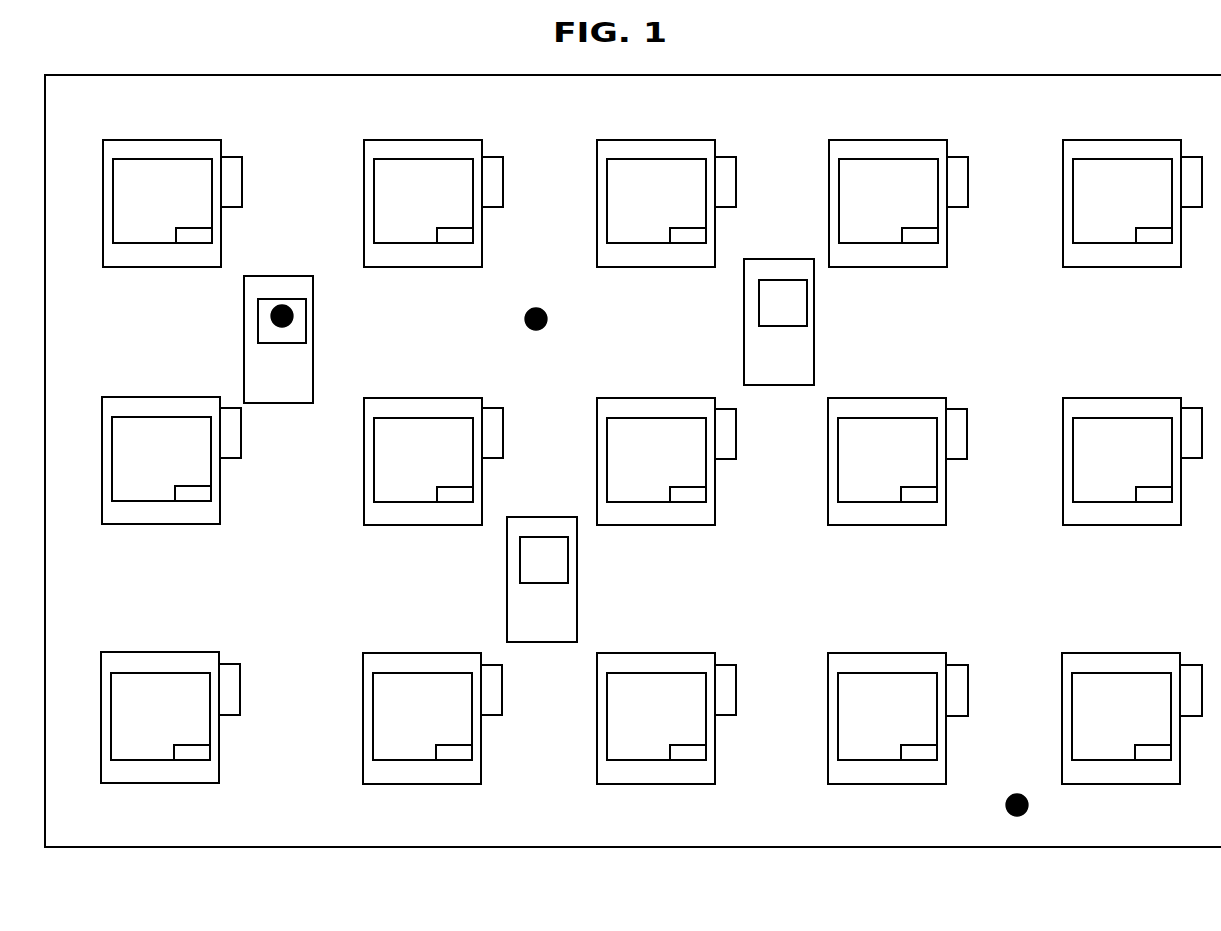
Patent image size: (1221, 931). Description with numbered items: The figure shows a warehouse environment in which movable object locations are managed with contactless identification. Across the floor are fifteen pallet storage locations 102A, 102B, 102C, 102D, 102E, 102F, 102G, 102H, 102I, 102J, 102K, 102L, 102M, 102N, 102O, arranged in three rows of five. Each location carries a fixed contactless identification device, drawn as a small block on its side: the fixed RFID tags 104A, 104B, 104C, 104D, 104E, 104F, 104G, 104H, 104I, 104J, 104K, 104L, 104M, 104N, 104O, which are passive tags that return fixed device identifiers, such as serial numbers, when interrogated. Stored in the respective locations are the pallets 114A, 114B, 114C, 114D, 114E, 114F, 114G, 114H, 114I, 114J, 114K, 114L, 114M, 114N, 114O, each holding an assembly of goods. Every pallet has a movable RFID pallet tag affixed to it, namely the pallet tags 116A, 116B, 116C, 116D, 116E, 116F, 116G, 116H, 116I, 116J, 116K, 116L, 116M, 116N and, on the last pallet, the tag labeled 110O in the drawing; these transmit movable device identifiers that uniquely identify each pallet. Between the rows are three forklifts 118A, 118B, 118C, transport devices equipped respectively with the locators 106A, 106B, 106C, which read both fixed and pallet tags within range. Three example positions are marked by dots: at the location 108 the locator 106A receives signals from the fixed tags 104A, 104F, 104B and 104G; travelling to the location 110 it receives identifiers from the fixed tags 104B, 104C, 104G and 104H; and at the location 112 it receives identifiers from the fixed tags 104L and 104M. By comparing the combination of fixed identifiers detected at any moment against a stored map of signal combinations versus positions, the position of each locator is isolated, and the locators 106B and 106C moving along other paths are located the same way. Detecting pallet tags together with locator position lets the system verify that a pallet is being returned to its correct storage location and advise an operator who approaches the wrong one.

The pallet storage location 102A is at (155, 140).
The pallet storage location 102B is at (416, 140).
The pallet storage location 102C is at (650, 140).
The pallet storage location 102D is at (882, 140).
The pallet storage location 102E is at (1117, 140).
The pallet storage location 102F is at (160, 397).
The pallet storage location 102G is at (417, 398).
The pallet storage location 102H is at (648, 398).
The pallet storage location 102I is at (905, 398).
The pallet storage location 102J is at (1120, 398).
The pallet storage location 102K is at (165, 652).
The pallet storage location 102L is at (415, 653).
The pallet storage location 102M is at (675, 653).
The pallet storage location 102N is at (885, 653).
The pallet storage location 102O is at (1120, 653).
The fixed RFID tag 104A is at (230, 157).
The fixed RFID tag 104B is at (490, 157).
The fixed RFID tag 104C is at (725, 157).
The fixed RFID tag 104D is at (956, 157).
The fixed RFID tag 104E is at (1192, 157).
The fixed RFID tag 104F is at (241, 433).
The fixed RFID tag 104G is at (493, 408).
The fixed RFID tag 104H is at (736, 428).
The fixed RFID tag 104I is at (967, 428).
The fixed RFID tag 104J is at (1195, 408).
The fixed RFID tag 104K is at (241, 688).
The fixed RFID tag 104L is at (502, 690).
The fixed RFID tag 104M is at (736, 690).
The fixed RFID tag 104N is at (958, 665).
The fixed RFID tag 104O is at (1192, 665).
The pallet 114A is at (152, 243).
The pallet 114B is at (420, 243).
The pallet 114C is at (648, 243).
The pallet 114D is at (884, 243).
The pallet 114E is at (1113, 243).
The pallet 114F is at (160, 501).
The pallet 114G is at (415, 502).
The pallet 114H is at (635, 502).
The pallet 114I is at (875, 502).
The pallet 114J is at (1110, 502).
The pallet 114K is at (148, 760).
The pallet 114L is at (420, 760).
The pallet 114M is at (640, 760).
The pallet 114N is at (875, 760).
The pallet 114O is at (1100, 760).
The pallet tag 116A is at (195, 228).
The pallet tag 116B is at (456, 228).
The pallet tag 116C is at (690, 228).
The pallet tag 116D is at (922, 228).
The pallet tag 116E is at (1156, 228).
The pallet tag 116F is at (195, 486).
The pallet tag 116G is at (456, 487).
The pallet tag 116H is at (685, 487).
The pallet tag 116I is at (918, 487).
The pallet tag 116J is at (1156, 487).
The pallet tag 116K is at (195, 745).
The pallet tag 116L is at (455, 745).
The pallet tag 116M is at (685, 745).
The pallet tag 116N is at (918, 745).
The pallet tag 110O is at (1155, 745).
The forklift 118A is at (290, 276).
The forklift 118B is at (777, 259).
The forklift 118C is at (540, 517).
The locator 106A is at (293, 343).
The locator 106B is at (800, 326).
The locator 106C is at (560, 583).
The location 108 is at (292, 317).
The location 110 is at (546, 325).
The location 112 is at (1012, 795).